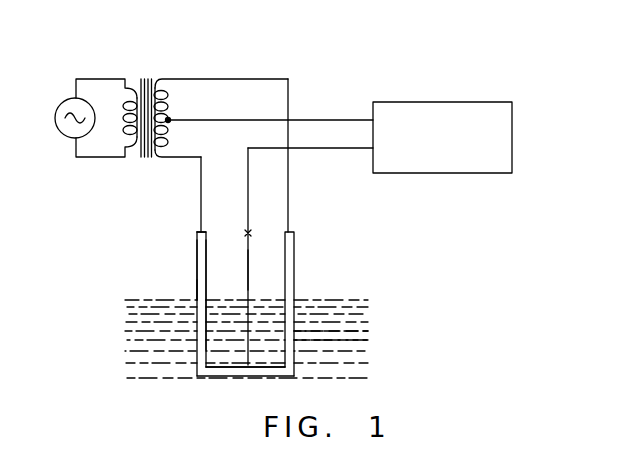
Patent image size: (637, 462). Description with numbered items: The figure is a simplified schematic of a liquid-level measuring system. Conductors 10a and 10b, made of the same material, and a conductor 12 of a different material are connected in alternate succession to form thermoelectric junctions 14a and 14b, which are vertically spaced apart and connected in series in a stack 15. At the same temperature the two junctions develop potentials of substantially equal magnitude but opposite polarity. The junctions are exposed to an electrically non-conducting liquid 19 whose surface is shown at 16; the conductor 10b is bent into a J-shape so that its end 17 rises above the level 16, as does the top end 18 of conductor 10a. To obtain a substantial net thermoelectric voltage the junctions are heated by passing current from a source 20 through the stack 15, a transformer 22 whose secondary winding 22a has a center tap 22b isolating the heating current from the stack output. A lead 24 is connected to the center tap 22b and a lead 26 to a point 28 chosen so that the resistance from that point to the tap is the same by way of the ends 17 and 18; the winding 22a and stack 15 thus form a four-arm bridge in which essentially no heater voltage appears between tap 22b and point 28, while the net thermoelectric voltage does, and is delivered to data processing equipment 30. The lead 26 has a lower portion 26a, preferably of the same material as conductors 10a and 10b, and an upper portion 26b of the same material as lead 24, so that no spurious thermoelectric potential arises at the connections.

The conductor 10a is at (203, 266).
The conductor 10b is at (202, 352).
The conductor 12 is at (200, 290).
The thermoelectric junction 14a is at (205, 273).
The thermoelectric junction 14b is at (200, 325).
The stack 15 is at (191, 244).
The liquid surface 16 is at (310, 298).
The end of conductor 17 is at (292, 232).
The top end of conductor 18 is at (197, 232).
The liquid 19 is at (338, 351).
The source 20 is at (62, 133).
The transformer 22 is at (139, 71).
The secondary winding 22a is at (157, 80).
The center tap 22b is at (170, 119).
The lead 24 is at (300, 118).
The lead 26 is at (248, 210).
The lower portion of lead 26a is at (258, 263).
The upper portion of lead 26b is at (248, 173).
The point 28 is at (262, 362).
The data processing equipment 30 is at (443, 173).